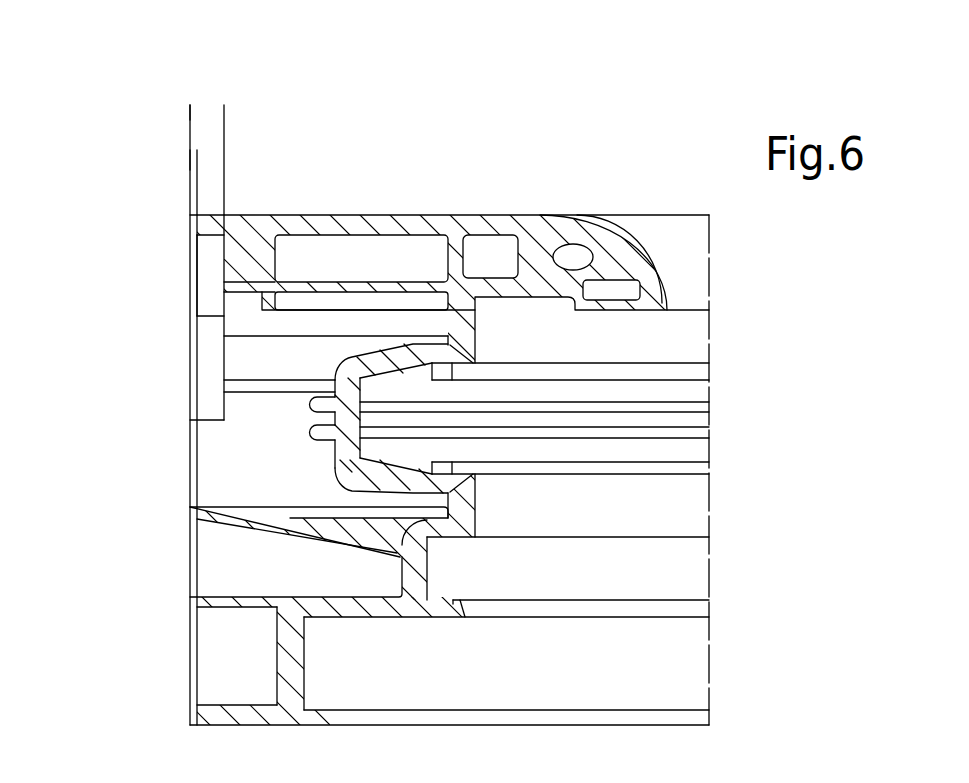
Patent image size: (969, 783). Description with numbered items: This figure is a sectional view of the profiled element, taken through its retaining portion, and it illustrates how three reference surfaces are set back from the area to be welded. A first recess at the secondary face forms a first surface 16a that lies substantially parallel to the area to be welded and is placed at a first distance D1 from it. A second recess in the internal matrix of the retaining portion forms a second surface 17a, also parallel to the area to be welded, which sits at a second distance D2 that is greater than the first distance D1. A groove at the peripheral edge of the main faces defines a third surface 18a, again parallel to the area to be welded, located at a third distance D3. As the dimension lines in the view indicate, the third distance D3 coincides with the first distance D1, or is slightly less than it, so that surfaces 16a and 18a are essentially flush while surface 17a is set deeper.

The third surface 18a is at (196, 216).
The first surface 16a is at (197, 283).
The second surface 17a is at (223, 290).
The first distance D1 is at (233, 160).
The second distance D2 is at (262, 109).
The third distance D3 is at (157, 158).